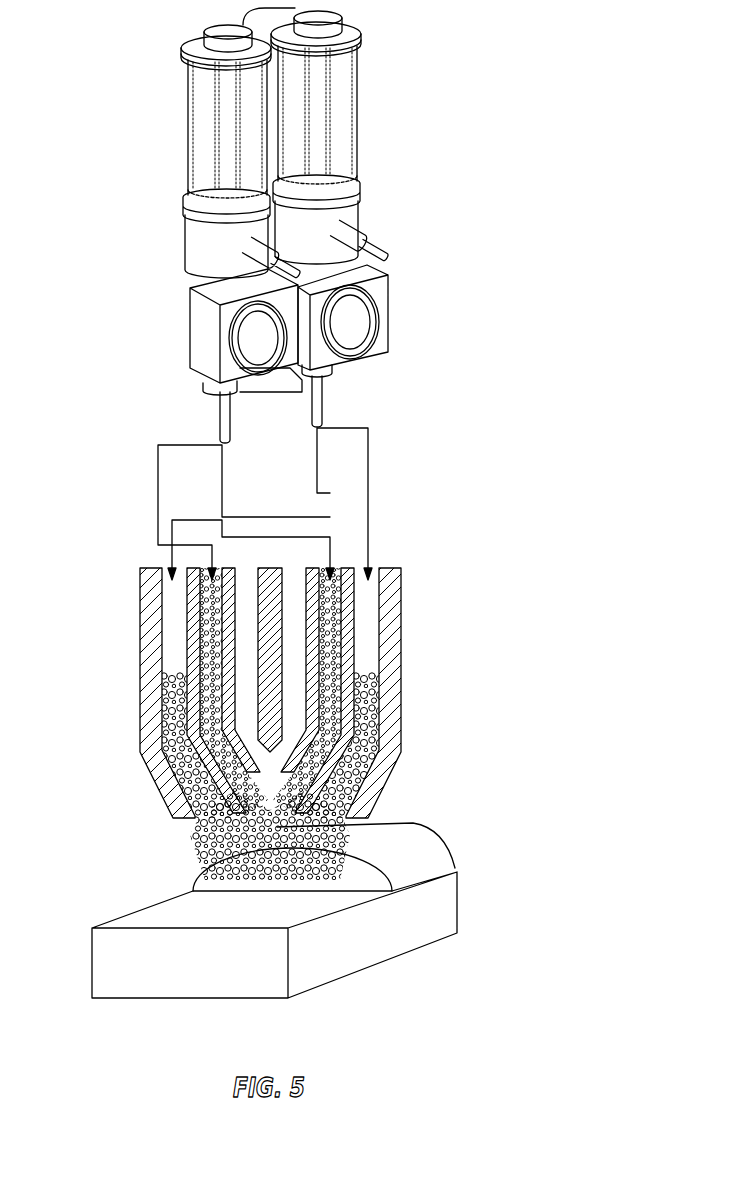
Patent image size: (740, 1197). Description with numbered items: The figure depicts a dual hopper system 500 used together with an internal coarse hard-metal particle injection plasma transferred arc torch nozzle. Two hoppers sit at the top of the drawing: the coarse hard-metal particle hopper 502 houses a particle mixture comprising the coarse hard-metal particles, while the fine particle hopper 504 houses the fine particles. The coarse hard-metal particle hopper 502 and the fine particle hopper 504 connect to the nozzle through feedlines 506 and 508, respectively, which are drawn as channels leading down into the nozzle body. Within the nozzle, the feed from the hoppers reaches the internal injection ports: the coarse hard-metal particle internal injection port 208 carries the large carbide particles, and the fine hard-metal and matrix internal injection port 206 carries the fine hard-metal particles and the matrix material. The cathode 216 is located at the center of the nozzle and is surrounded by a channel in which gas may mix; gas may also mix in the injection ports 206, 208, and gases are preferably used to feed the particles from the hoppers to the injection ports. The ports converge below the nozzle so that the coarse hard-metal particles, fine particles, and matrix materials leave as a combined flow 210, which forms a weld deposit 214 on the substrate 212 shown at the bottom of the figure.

The hopper system 500 is at (405, 168).
The coarse hard-metal particle hopper 502 is at (186, 107).
The fine particle hopper 504 is at (357, 107).
The feedline 506 is at (222, 493).
The feedline 508 is at (303, 463).
The cathode 216 is at (273, 580).
The fine hard-metal and matrix internal injection port 206 is at (208, 685).
The coarse hard-metal particle internal injection port 208 is at (166, 757).
The combined flow 210 is at (300, 843).
The substrate 212 is at (310, 973).
The weld deposit 214 is at (443, 860).